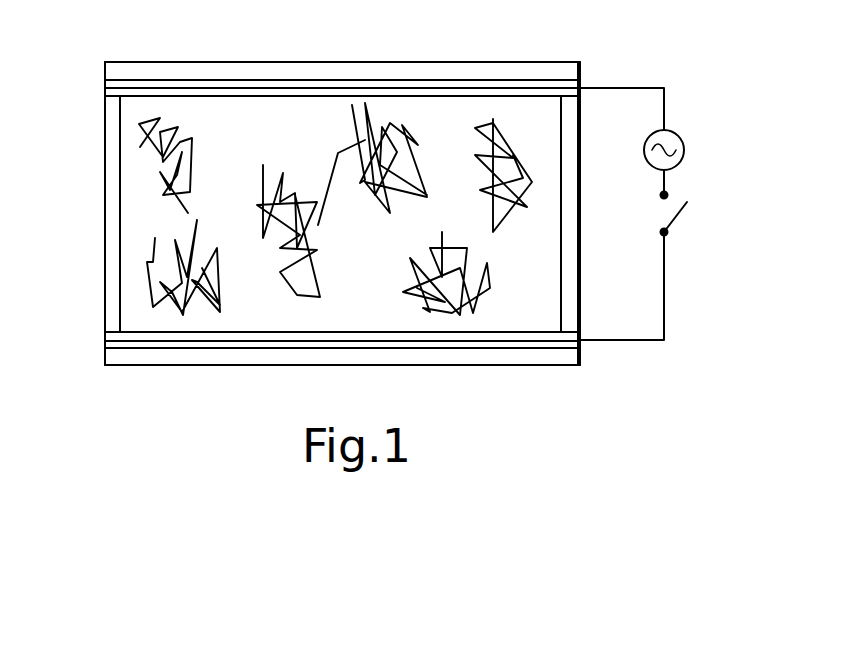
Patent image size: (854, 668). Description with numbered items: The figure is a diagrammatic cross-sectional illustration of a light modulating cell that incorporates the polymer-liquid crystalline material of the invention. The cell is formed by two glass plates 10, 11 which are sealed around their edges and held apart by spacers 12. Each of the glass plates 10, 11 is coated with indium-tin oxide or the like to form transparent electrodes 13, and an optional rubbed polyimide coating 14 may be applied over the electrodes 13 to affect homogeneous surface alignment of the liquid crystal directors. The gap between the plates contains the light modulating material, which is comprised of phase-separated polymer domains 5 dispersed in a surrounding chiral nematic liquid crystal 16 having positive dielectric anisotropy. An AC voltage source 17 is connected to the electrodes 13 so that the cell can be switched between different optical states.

The polymer network 5 is at (383, 185).
The glass plate 10 is at (140, 70).
The glass plate 11 is at (278, 356).
The spacers 12 is at (111, 183).
The transparent electrodes 13 is at (117, 82).
The rubbed polyimide coating 14 is at (105, 95).
The chiral nematic liquid crystal 16 is at (523, 277).
The AC voltage source 17 is at (672, 140).